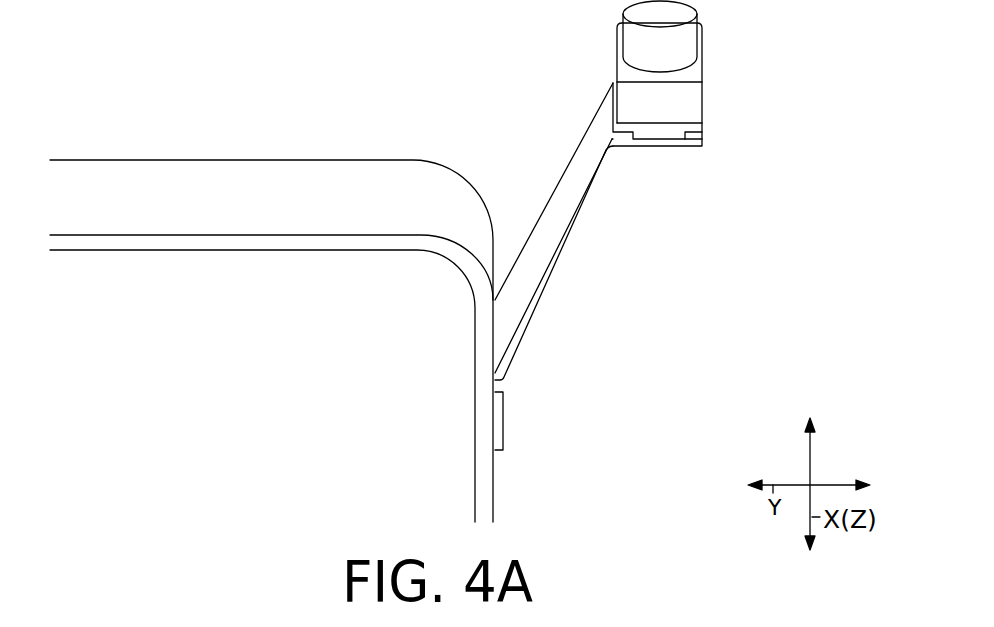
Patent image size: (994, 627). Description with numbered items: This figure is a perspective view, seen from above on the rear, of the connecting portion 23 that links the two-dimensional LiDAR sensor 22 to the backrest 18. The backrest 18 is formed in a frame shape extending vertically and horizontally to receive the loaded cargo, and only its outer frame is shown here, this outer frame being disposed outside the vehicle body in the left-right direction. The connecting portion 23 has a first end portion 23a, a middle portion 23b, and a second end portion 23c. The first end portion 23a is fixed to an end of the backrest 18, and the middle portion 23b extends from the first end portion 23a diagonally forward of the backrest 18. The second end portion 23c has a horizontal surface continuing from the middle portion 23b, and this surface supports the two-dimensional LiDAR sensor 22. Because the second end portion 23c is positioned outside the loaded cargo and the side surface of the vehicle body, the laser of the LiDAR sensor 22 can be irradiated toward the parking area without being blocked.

The backrest 18 is at (272, 175).
The two-dimensional LiDAR sensor 22 is at (677, 40).
The connecting portion 23 is at (647, 238).
The first end portion 23a is at (503, 430).
The middle portion 23b is at (540, 295).
The second end portion 23c is at (657, 113).